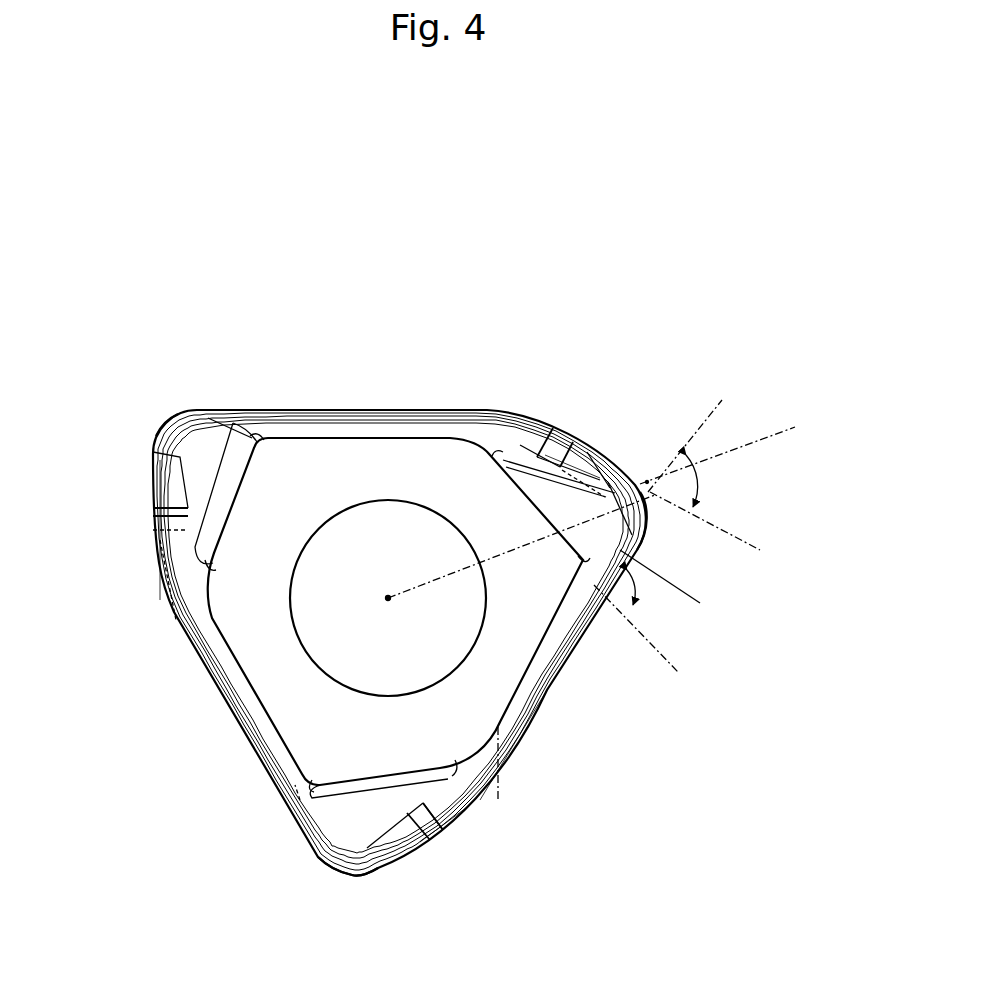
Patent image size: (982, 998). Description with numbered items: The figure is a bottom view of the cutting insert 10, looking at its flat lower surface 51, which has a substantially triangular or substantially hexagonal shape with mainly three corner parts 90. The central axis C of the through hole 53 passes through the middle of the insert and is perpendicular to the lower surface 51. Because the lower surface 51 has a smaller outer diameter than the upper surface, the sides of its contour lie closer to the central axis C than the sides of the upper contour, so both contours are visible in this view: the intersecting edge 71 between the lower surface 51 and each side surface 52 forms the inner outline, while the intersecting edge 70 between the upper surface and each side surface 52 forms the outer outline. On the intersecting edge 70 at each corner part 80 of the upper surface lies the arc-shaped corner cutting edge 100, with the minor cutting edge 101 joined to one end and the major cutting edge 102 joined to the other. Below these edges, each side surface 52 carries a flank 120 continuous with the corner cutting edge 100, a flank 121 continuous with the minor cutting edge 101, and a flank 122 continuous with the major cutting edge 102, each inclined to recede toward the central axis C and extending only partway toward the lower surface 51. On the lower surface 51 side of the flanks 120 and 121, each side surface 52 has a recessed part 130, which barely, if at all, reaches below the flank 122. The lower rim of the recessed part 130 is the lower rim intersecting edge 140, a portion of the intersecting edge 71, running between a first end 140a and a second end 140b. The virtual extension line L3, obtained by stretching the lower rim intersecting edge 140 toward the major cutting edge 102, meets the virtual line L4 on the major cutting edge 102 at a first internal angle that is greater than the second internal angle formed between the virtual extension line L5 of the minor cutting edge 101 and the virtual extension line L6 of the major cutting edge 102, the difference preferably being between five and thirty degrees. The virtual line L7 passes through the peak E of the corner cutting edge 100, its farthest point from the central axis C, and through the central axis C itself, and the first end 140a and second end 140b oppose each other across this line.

The cutting insert 10 is at (480, 326).
The lower surface 51 is at (510, 705).
The side surface 52 is at (150, 478).
The through hole 53 is at (393, 500).
The intersecting edge 70 is at (176, 406).
The intersecting edge 71 is at (226, 529).
The corner part 80 is at (167, 423).
The corner part 90 is at (218, 418).
The corner cutting edge 100 is at (165, 427).
The minor cutting edge 101 is at (152, 453).
The major cutting edge 102 is at (237, 413).
The flank 120 is at (163, 413).
The flank 121 is at (158, 497).
The flank 122 is at (257, 420).
The recessed part 130 is at (183, 541).
The lower rim intersecting edge 140 is at (230, 490).
The first end 140a is at (210, 568).
The second end 140b is at (260, 442).
The central axis C is at (509, 548).
The peak E is at (647, 480).
The virtual extension line L3 is at (655, 641).
The virtual line L4 is at (675, 585).
The virtual extension line L5 is at (722, 531).
The virtual extension line L6 is at (692, 430).
The virtual line L7 is at (734, 444).